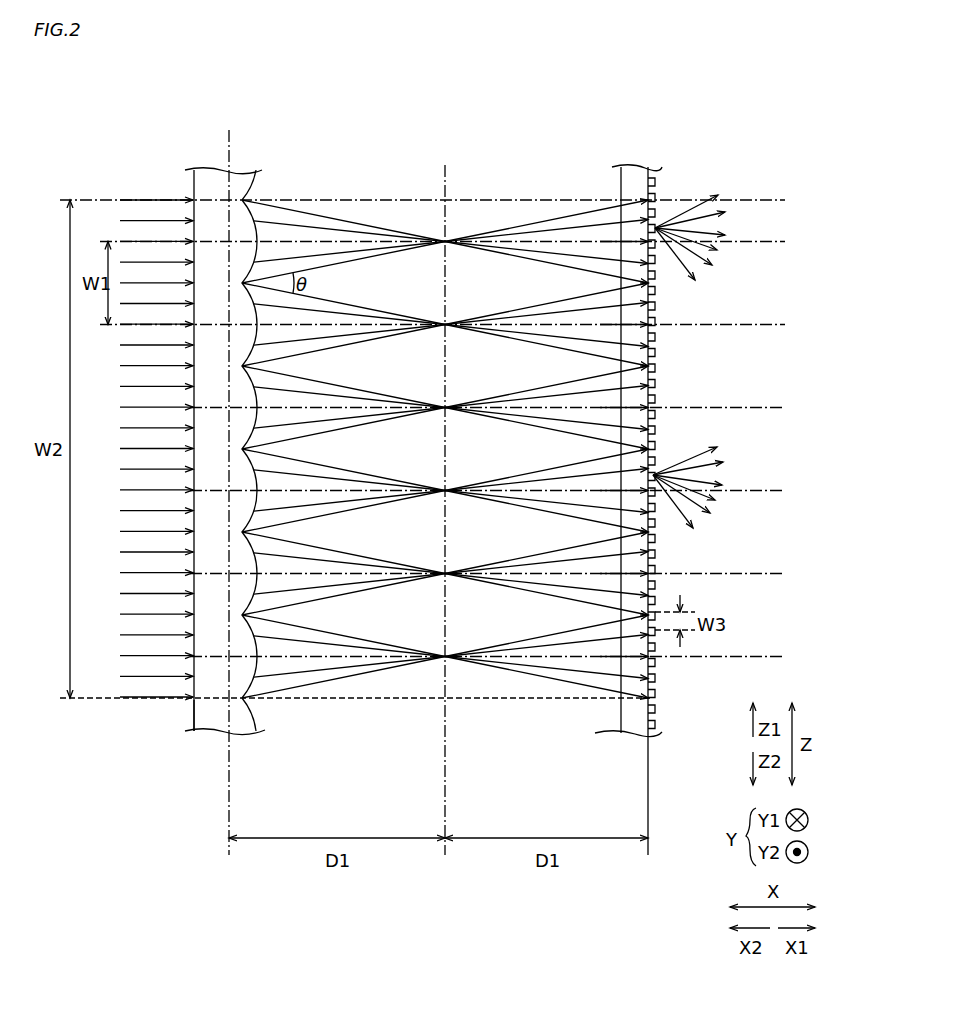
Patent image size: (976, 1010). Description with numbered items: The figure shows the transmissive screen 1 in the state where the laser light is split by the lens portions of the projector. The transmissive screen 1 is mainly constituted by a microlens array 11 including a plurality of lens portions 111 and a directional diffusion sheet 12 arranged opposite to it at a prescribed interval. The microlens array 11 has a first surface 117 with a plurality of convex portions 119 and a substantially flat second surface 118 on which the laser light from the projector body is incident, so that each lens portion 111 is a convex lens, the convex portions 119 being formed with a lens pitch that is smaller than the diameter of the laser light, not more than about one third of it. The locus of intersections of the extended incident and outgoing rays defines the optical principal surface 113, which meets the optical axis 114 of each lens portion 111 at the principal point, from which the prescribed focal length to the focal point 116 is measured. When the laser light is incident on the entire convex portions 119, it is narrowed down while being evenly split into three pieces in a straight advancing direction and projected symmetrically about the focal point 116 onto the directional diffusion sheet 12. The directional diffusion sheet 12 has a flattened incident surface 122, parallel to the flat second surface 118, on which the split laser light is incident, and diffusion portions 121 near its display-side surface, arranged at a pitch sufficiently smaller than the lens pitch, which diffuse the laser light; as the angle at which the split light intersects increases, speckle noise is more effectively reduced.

The transmissive screen 1 is at (397, 118).
The microlens array 11 is at (178, 172).
The lens portions 111 is at (217, 212).
The optical principal surface 113 is at (228, 158).
The optical axis 114 is at (750, 242).
The focal point 116 is at (443, 246).
The first surface 117 is at (258, 718).
The second surface 118 is at (188, 717).
The convex portions 119 is at (282, 220).
The directional diffusion sheet 12 is at (620, 186).
The diffusion portions 121 is at (653, 200).
The incident surface 122 is at (621, 722).